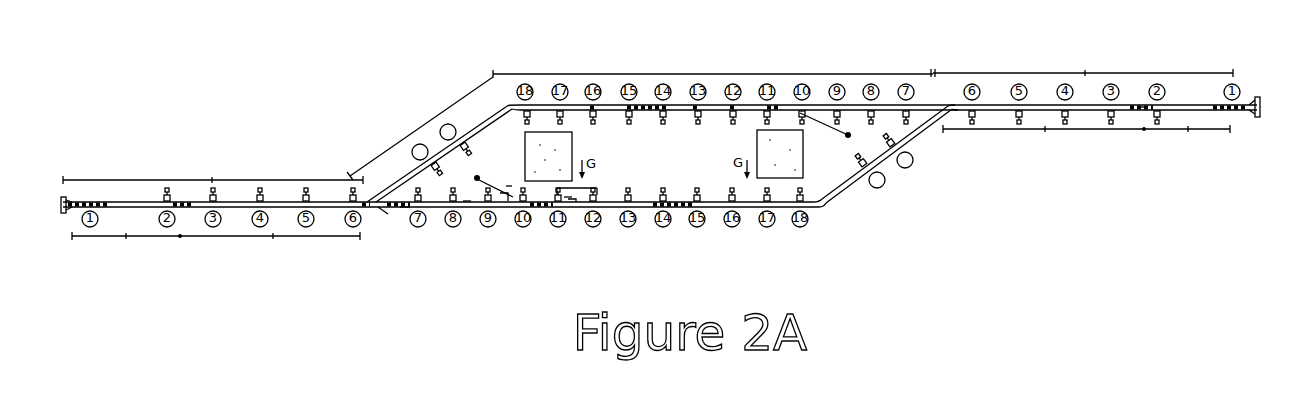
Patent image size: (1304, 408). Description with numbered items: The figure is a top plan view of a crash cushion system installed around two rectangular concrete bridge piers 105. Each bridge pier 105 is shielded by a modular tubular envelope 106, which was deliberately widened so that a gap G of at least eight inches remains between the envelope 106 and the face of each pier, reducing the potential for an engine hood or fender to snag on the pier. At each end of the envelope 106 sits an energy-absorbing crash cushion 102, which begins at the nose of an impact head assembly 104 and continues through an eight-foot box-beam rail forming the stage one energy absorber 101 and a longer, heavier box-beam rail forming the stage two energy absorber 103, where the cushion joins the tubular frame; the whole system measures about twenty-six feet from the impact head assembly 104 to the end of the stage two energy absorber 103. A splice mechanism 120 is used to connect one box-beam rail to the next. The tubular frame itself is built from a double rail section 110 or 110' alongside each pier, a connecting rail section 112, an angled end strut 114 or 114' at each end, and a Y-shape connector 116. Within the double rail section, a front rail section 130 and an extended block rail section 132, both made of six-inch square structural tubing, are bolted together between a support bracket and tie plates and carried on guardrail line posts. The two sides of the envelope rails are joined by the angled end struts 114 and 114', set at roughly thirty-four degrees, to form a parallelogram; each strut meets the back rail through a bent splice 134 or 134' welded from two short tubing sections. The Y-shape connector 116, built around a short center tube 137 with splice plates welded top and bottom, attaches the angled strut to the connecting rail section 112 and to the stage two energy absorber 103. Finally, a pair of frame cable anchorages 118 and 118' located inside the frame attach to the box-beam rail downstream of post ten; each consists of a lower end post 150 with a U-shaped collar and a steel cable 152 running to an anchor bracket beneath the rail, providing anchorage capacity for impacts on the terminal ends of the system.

The stage one energy absorber 101 is at (651, 192).
The energy-absorbing crash cushion 102 is at (648, 118).
The stage two energy absorber 103 is at (662, 192).
The impact head assembly 104 is at (62, 198).
The bridge pier 105 is at (572, 142).
The tubular envelope 106 is at (640, 117).
The double rail section 110 is at (441, 238).
The double rail section 110' is at (888, 65).
The connecting rail section 112 is at (467, 205).
The angled end strut 114 is at (887, 154).
The angled end strut 114' is at (439, 154).
The Y-shape connector 116 is at (405, 213).
The frame cable anchorage 118 is at (492, 166).
The frame cable anchorage 118' is at (817, 94).
The splice mechanism 120 is at (1142, 110).
The front rail section 130 is at (571, 203).
The extended block rail section 132 is at (568, 203).
The bent splice 134 is at (886, 164).
The bent splice 134' is at (472, 96).
The center tube 137 is at (383, 212).
The lower end post 150 is at (477, 178).
The steel cable 152 is at (504, 193).